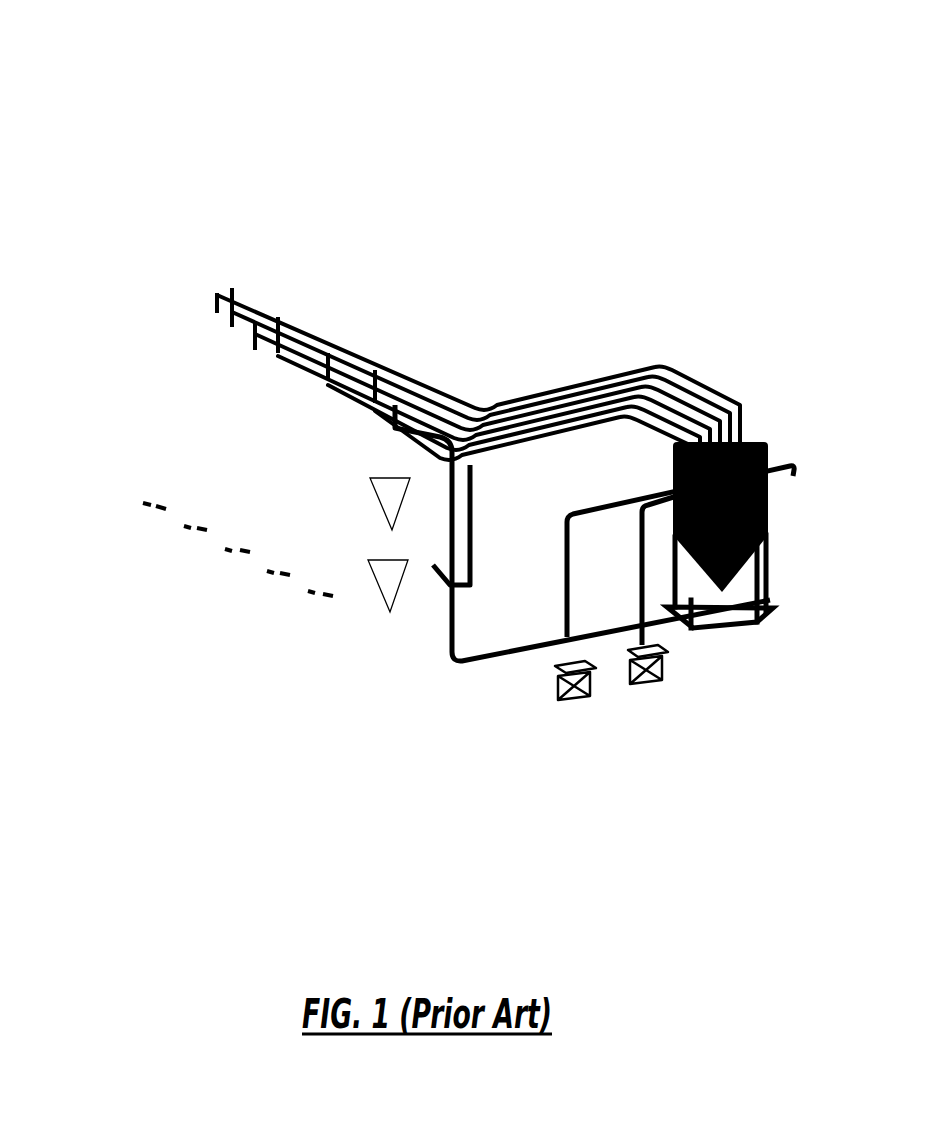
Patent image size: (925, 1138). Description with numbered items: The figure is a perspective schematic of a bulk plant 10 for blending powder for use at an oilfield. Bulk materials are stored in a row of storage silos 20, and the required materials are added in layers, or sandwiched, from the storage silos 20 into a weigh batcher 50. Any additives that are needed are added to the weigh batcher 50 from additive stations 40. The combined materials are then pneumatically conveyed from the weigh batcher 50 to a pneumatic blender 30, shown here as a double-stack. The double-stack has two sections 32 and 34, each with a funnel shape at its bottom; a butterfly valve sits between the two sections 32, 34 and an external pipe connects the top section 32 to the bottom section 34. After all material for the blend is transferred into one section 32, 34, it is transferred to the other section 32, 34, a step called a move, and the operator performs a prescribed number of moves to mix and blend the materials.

The bulk plant 10 is at (533, 97).
The storage silos 20 is at (120, 375).
The pneumatic blender 30 is at (380, 677).
The top section 32 is at (387, 480).
The bottom section 34 is at (385, 563).
The additive stations 40 is at (640, 678).
The weigh batcher 50 is at (768, 528).